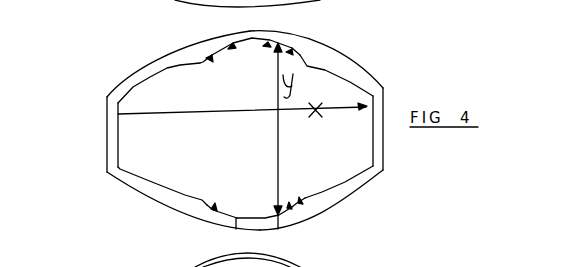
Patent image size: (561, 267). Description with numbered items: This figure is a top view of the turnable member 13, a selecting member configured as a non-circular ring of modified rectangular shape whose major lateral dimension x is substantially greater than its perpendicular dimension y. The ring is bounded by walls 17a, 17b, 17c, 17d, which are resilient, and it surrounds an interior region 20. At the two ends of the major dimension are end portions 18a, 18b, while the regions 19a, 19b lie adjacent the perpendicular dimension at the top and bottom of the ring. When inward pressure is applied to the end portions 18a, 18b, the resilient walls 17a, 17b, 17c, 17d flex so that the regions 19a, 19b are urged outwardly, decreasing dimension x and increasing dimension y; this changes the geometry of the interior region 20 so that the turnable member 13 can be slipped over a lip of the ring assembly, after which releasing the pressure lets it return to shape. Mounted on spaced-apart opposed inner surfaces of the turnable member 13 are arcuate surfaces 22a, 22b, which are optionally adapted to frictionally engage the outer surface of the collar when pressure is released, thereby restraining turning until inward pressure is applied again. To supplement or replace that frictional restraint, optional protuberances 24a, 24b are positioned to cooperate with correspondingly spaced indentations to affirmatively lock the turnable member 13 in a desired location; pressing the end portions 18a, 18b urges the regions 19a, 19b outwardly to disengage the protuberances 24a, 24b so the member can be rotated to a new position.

The turnable member 13 is at (245, 137).
The wall 17a is at (193, 53).
The wall 17b is at (320, 55).
The wall 17c is at (152, 205).
The wall 17d is at (322, 203).
The end portion 18a is at (107, 133).
The end portion 18b is at (384, 138).
The region 19a is at (253, 30).
The region 19b is at (219, 226).
The interior region 20 is at (252, 148).
The arcuate surface 22a is at (250, 45).
The arcuate surface 22b is at (250, 214).
The protuberance 24a is at (213, 58).
The protuberance 24b is at (228, 210).